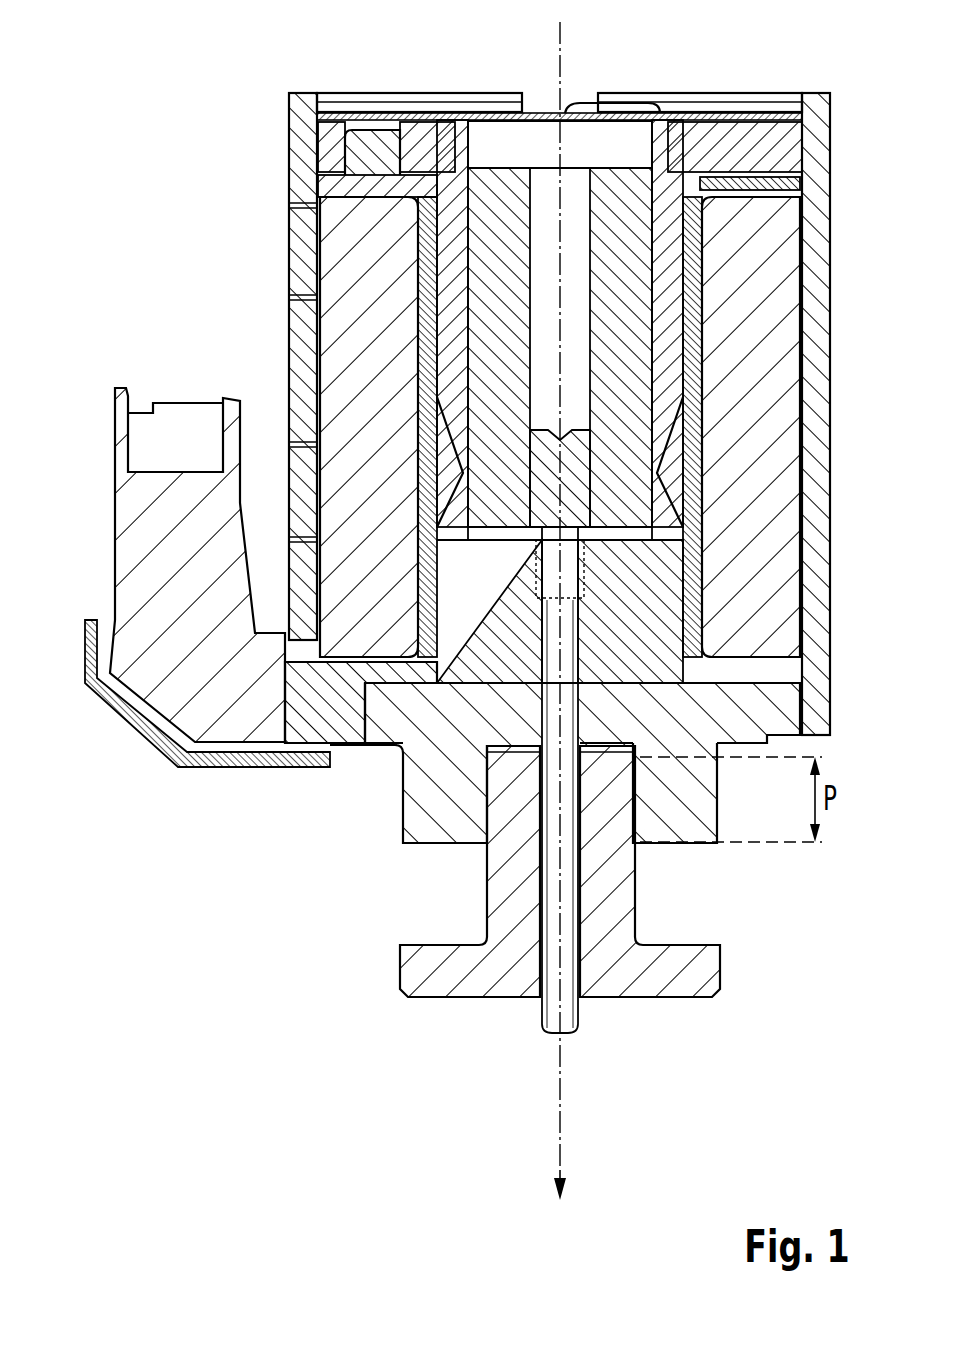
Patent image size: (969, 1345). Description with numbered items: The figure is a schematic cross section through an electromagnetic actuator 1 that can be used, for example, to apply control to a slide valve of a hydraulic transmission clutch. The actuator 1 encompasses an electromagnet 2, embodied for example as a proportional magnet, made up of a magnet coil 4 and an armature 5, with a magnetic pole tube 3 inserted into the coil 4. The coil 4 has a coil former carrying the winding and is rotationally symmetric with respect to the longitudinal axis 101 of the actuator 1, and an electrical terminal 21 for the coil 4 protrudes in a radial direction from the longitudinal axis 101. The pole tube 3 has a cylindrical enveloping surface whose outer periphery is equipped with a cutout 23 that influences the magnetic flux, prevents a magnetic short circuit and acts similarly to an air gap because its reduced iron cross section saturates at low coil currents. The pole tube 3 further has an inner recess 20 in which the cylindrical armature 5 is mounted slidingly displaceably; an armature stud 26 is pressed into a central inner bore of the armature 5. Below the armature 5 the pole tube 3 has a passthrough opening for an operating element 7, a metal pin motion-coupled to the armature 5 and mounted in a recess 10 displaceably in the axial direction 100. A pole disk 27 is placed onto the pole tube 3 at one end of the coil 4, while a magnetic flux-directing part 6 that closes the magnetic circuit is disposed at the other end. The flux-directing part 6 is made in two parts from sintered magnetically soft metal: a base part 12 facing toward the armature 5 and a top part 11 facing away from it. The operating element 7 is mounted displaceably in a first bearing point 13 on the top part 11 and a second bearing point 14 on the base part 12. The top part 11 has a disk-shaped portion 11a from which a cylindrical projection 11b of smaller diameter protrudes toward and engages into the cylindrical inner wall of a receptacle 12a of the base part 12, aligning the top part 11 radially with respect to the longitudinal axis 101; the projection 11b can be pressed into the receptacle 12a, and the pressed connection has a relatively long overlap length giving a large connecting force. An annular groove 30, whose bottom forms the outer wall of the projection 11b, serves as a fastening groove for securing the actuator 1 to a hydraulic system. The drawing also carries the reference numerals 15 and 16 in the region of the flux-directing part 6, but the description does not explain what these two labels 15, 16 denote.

The electromagnetic actuator 1 is at (162, 98).
The electromagnet 2 is at (305, 251).
The magnetic pole tube 3 is at (449, 347).
The magnet coil 4 is at (367, 315).
The armature 5 is at (493, 273).
The magnetic flux-directing part 6 is at (330, 997).
The operating element 7 is at (553, 1013).
The recess 10 is at (587, 833).
The top part 11 is at (673, 1000).
The disk-shaped portion 11a is at (712, 970).
The projection 11b is at (637, 868).
The base part 12 is at (425, 820).
The receptacle 12a is at (633, 792).
The first bearing point 13 is at (602, 996).
The second bearing point 14 is at (520, 700).
The press-fit region 15 is at (587, 933).
The lower cover 16 is at (580, 728).
The inner recess 20 is at (722, 253).
The electrical terminal 21 is at (150, 505).
The cutout 23 is at (672, 473).
The armature stud 26 is at (582, 460).
The pole disk 27 is at (426, 133).
The annular groove 30 is at (392, 912).
The axial direction 100 is at (566, 1145).
The longitudinal axis 101 is at (566, 31).